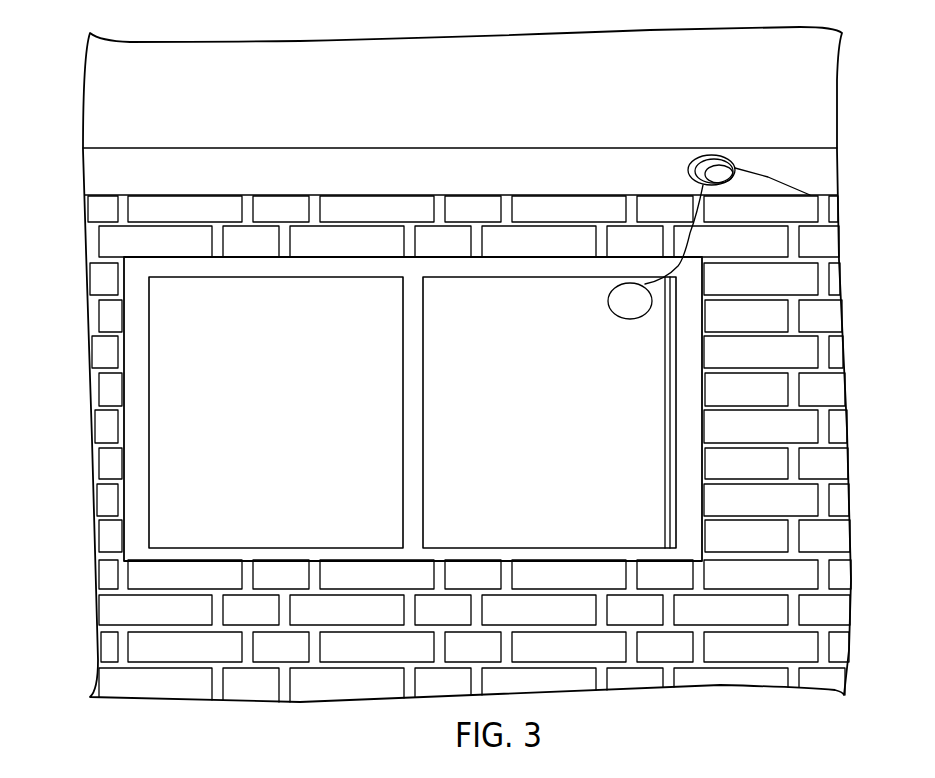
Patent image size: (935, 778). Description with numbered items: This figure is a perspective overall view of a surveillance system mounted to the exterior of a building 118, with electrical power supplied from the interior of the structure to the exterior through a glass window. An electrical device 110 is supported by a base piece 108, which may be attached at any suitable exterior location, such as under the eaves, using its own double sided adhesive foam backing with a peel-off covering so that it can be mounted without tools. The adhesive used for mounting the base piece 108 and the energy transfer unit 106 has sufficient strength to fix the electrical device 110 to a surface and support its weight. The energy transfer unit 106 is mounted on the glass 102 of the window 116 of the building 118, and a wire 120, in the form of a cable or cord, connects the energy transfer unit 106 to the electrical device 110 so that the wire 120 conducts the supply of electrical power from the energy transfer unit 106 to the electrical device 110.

The glass 102 is at (518, 409).
The energy transfer unit 106 is at (618, 319).
The base piece 108 is at (718, 145).
The electrical device 110 is at (727, 163).
The window 116 is at (683, 333).
The building 118 is at (858, 432).
The wire 120 is at (768, 177).